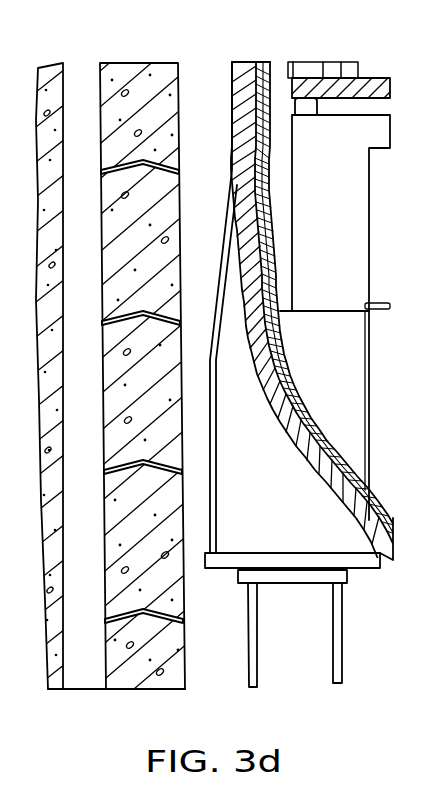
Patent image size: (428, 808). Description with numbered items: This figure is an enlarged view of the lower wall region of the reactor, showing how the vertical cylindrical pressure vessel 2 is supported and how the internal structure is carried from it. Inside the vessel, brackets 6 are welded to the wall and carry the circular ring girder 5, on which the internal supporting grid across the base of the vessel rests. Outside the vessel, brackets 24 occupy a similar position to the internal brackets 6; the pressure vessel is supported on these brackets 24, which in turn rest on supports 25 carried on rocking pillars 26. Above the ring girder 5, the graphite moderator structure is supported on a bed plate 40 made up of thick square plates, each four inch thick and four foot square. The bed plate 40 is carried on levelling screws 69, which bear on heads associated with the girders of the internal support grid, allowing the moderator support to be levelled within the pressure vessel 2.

The pressure vessel 2 is at (287, 355).
The ring girder 5 is at (292, 183).
The brackets 6 is at (365, 373).
The brackets 24 is at (219, 507).
The supports 25 is at (293, 572).
The rocking pillars 26 is at (325, 666).
The bed plate 40 is at (339, 86).
The levelling screws 69 is at (305, 98).